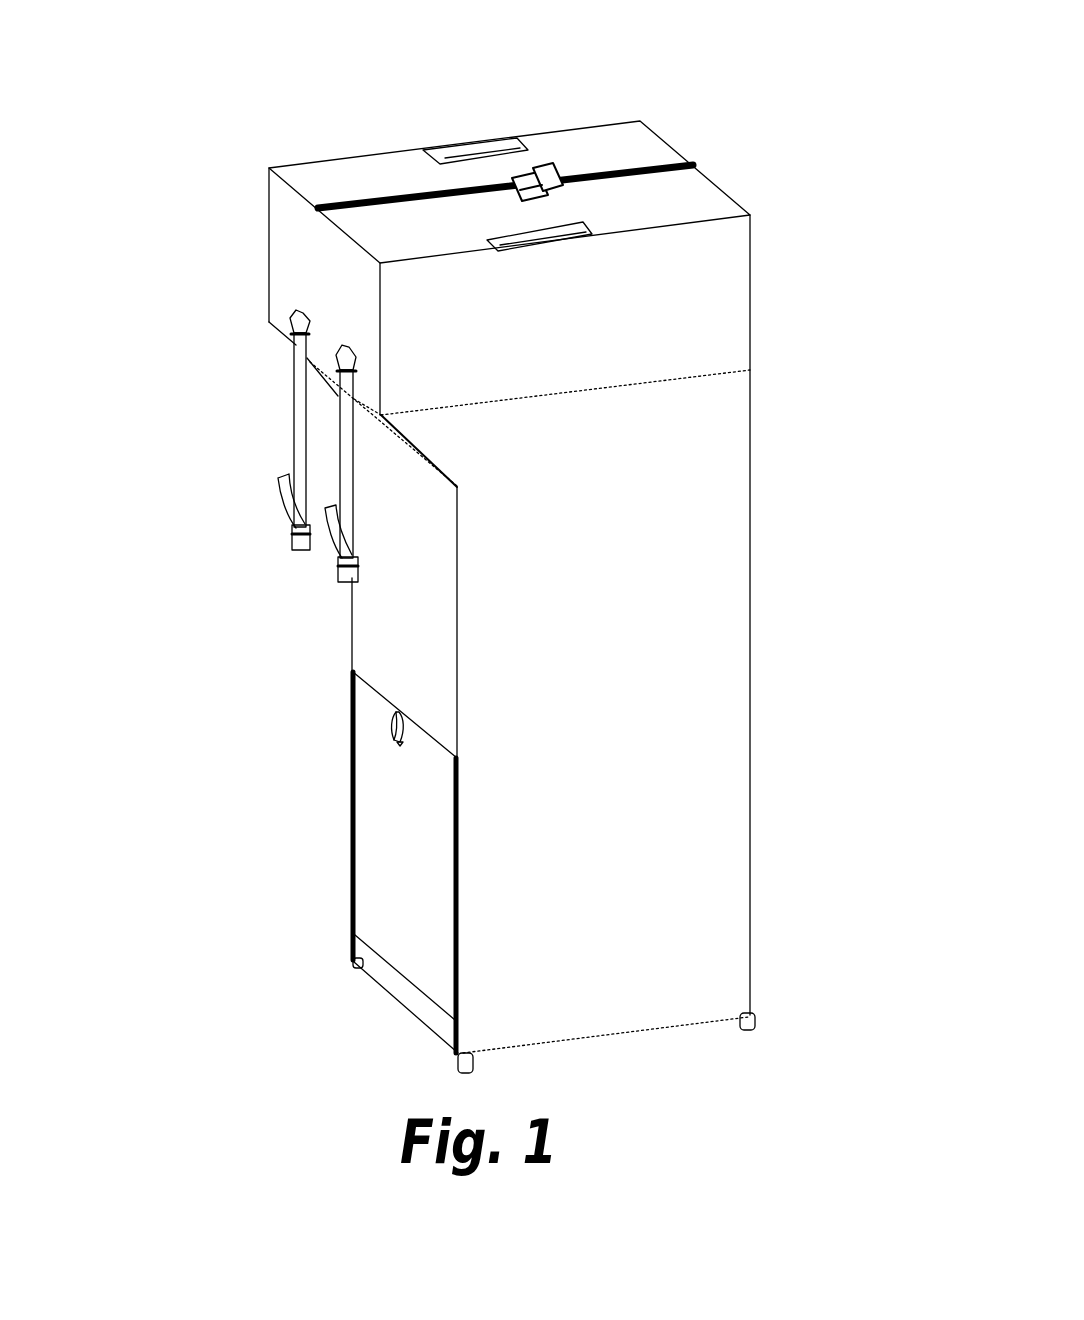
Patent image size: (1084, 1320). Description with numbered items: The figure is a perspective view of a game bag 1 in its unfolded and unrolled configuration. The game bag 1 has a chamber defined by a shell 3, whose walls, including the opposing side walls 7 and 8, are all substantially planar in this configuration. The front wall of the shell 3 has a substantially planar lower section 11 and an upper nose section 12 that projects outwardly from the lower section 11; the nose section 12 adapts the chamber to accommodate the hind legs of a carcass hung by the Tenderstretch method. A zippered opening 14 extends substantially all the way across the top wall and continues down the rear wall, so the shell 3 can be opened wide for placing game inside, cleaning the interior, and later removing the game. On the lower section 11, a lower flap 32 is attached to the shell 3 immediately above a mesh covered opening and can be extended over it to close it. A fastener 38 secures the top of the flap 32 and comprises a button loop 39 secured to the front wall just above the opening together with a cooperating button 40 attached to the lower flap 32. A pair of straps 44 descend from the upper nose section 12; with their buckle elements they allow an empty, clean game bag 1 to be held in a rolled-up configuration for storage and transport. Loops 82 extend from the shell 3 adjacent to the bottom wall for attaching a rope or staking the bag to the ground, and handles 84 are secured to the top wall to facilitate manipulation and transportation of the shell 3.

The game bag 1 is at (200, 187).
The shell 3 is at (785, 605).
The side wall 7 is at (647, 143).
The side wall 8 is at (656, 690).
The planar lower section 11 is at (384, 598).
The upper nose section 12 is at (290, 279).
The zippered opening 14 is at (587, 153).
The lower flap 32 is at (390, 865).
The fastener 38 is at (366, 717).
The button loop 39 is at (402, 718).
The button 40 is at (400, 743).
The straps 44 is at (290, 405).
The loops 82 is at (352, 965).
The handles 84 is at (467, 143).